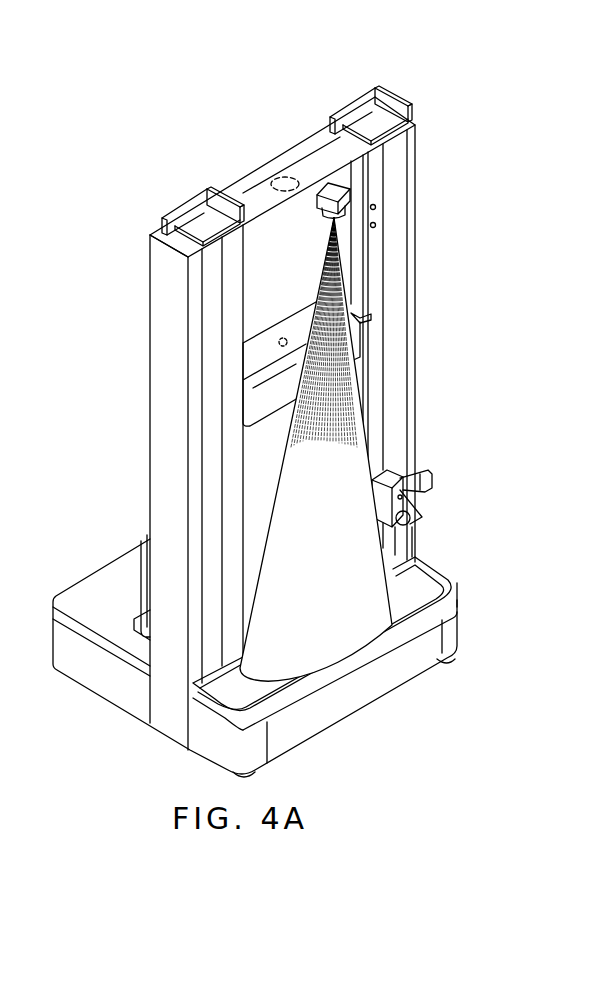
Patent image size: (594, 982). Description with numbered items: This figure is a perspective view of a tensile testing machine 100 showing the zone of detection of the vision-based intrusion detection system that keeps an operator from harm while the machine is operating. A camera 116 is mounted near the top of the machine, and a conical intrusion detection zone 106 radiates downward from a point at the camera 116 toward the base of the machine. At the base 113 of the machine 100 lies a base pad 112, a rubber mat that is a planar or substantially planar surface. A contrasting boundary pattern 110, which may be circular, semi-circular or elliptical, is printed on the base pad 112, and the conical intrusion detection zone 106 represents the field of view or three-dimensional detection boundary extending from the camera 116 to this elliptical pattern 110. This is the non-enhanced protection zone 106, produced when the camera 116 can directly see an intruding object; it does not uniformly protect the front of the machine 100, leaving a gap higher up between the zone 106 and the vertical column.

The tensile testing machine 100 is at (304, 431).
The conical intrusion detection zone 106 is at (373, 482).
The contrasting boundary pattern 110 is at (383, 628).
The base pad 112 is at (428, 587).
The base 113 is at (456, 640).
The camera 116 is at (318, 192).